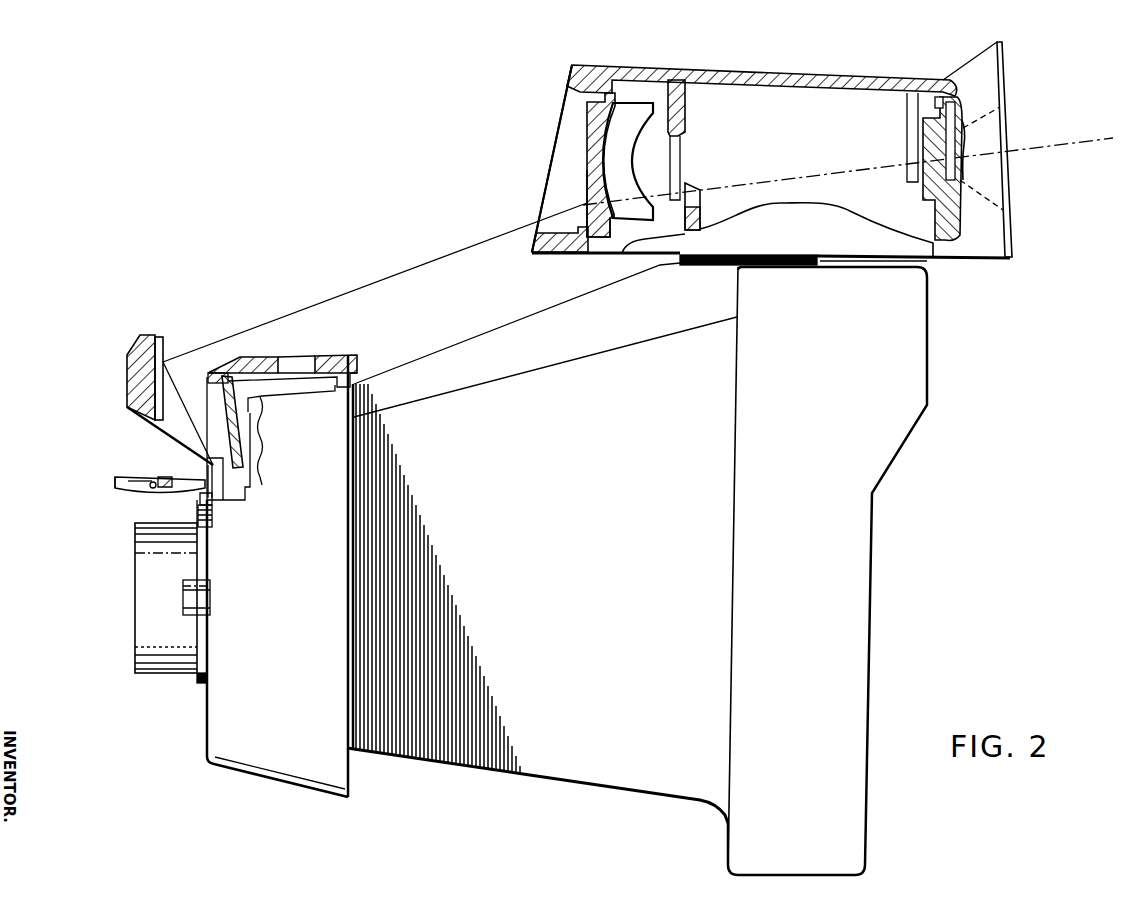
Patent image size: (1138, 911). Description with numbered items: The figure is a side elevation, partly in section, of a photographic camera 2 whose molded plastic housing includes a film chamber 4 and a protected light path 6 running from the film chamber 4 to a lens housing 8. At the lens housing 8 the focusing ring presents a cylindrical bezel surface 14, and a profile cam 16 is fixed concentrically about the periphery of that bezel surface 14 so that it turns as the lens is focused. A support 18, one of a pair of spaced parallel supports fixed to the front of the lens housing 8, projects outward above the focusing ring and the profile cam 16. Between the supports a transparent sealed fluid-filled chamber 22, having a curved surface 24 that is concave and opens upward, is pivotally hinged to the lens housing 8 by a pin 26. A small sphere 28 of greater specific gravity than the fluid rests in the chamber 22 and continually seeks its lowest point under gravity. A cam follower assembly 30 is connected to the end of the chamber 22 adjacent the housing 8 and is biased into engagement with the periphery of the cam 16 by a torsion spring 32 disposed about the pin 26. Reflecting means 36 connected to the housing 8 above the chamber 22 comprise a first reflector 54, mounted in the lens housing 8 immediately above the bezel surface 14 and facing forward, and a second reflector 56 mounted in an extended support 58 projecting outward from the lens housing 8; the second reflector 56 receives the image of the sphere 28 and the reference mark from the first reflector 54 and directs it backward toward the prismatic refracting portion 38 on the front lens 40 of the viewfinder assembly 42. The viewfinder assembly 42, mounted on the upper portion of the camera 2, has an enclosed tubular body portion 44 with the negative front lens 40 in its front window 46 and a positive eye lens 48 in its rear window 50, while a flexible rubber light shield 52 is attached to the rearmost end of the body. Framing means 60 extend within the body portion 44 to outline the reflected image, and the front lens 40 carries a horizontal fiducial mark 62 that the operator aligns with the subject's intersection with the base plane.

The photographic camera 2 is at (494, 773).
The film chamber 4 is at (792, 486).
The protected light path 6 is at (556, 524).
The lens housing 8 is at (275, 563).
The cylindrical bezel surface 14 is at (148, 615).
The profile cam 16 is at (198, 658).
The support 18 is at (196, 494).
The transparent sealed fluid-filled chamber 22 is at (117, 476).
The curved surface 24 is at (124, 488).
The pin 26 is at (165, 477).
The small sphere 28 is at (152, 481).
The cam follower assembly 30 is at (213, 498).
The torsion spring 32 is at (138, 487).
The reflecting means 36 is at (120, 382).
The prismatic refracting portion 38 is at (580, 201).
The front lens 40 is at (585, 140).
The viewfinder assembly 42 is at (790, 62).
The enclosed tubular body portion 44 is at (838, 72).
The front window 46 is at (558, 98).
The positive eye lens 48 is at (927, 134).
The rear window 50 is at (968, 144).
The flexible rubber light shield 52 is at (987, 78).
The first reflector 54 is at (240, 435).
The second reflector 56 is at (164, 342).
The extended support 58 is at (136, 337).
The framing means 60 is at (705, 209).
The fiducial mark 62 is at (584, 177).